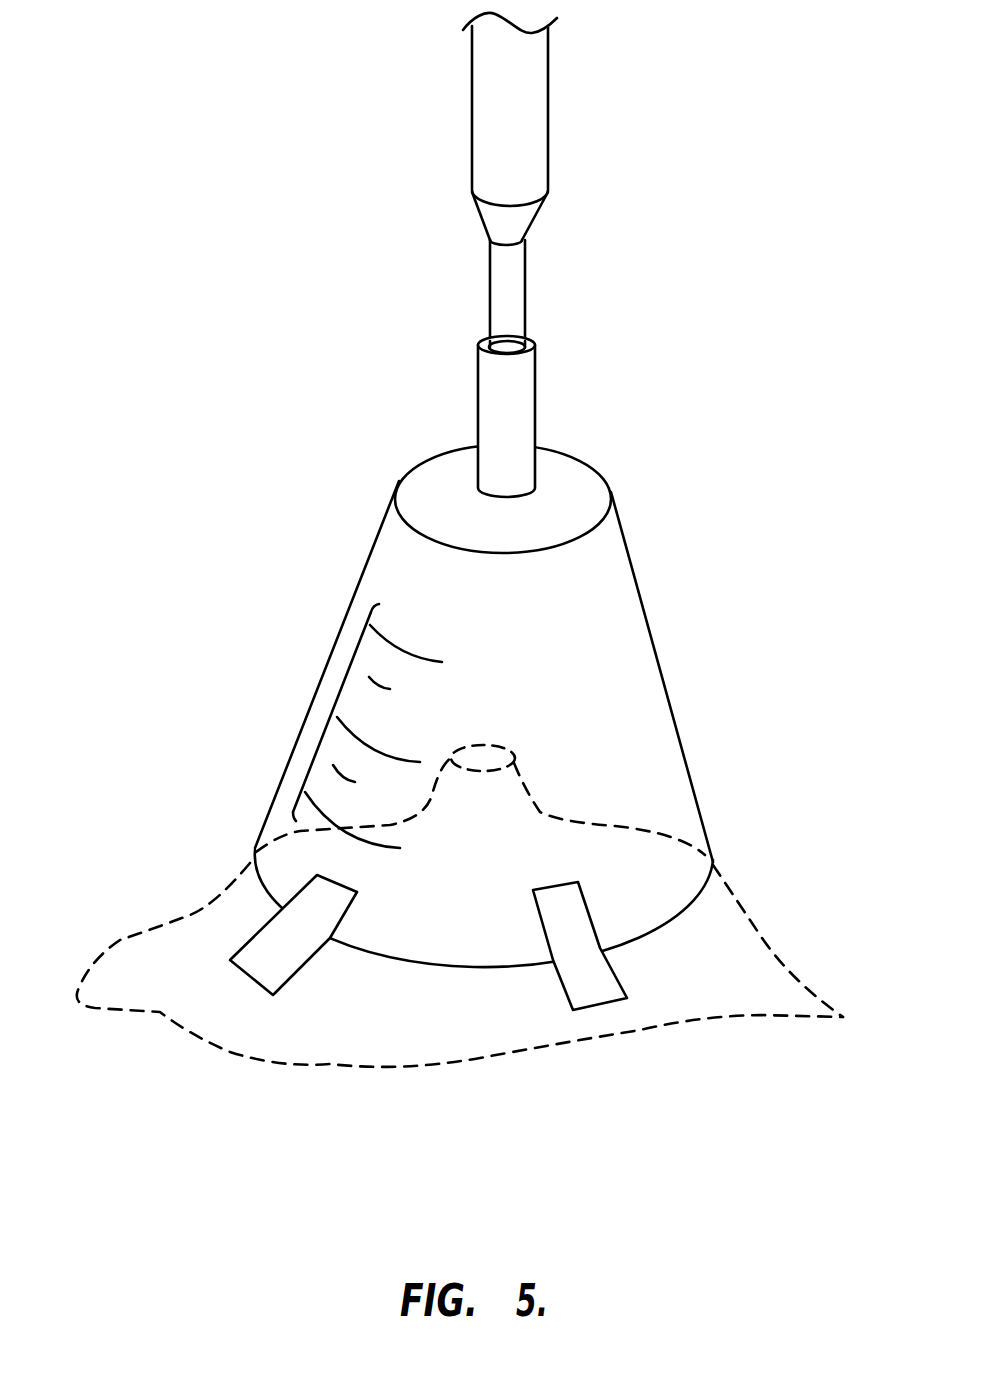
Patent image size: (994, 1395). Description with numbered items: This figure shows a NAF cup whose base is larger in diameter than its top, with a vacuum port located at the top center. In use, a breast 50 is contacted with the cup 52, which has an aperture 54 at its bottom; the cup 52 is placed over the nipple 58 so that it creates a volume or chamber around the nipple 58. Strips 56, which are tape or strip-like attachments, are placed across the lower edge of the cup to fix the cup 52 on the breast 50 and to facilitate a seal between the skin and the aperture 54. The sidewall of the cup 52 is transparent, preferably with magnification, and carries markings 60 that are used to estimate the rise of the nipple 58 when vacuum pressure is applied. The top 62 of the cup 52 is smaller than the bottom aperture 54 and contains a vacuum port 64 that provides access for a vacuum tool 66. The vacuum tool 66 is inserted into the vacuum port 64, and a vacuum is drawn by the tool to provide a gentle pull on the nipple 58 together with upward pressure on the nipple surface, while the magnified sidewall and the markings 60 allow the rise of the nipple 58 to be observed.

The breast 50 is at (118, 963).
The cup 52 is at (663, 592).
The aperture 54 is at (692, 912).
The strips 56 is at (295, 963).
The nipple 58 is at (615, 826).
The markings 60 is at (341, 670).
The top 62 is at (585, 492).
The vacuum port 64 is at (478, 400).
The vacuum tool 66 is at (540, 140).